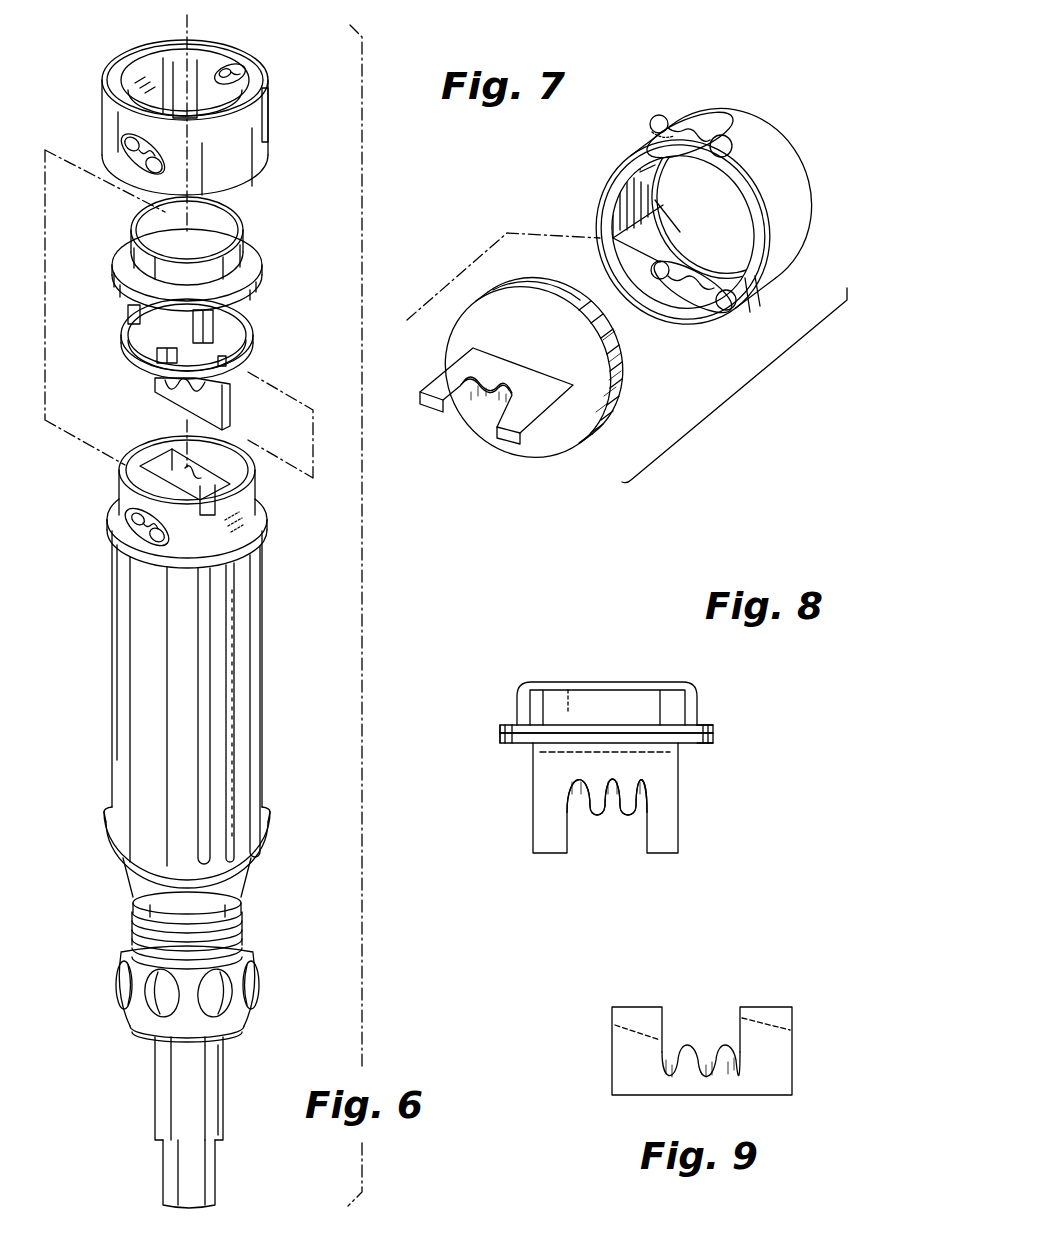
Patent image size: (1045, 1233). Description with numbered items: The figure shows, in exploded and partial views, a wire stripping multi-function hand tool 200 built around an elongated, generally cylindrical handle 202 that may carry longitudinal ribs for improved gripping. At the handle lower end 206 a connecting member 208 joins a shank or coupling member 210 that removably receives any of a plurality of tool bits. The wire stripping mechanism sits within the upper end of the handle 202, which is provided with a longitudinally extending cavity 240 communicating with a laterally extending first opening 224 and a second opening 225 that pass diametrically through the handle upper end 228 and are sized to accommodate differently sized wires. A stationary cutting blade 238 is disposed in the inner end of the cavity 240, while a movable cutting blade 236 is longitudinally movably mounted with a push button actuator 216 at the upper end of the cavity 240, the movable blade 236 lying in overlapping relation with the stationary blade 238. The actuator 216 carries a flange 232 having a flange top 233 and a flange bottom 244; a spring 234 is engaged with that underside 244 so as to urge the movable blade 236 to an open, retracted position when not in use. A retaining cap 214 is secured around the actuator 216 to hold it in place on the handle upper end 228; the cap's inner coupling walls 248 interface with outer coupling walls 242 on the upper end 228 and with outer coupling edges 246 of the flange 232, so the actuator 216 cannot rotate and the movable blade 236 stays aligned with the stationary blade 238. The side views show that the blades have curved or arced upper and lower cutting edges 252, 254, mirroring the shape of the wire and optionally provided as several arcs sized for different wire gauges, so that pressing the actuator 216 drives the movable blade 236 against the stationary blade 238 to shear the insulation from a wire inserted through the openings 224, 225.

In FIG. 6, the wire stripping multi-function hand tool 200 is at (53, 43).
In FIG. 6, the handle 202 is at (118, 697).
In FIG. 6, the handle lower end 206 is at (250, 967).
In FIG. 6, the connecting element 208 is at (163, 1077).
In FIG. 6, the coupling member 210 is at (173, 1170).
In FIG. 6, the retaining cap member 214 is at (268, 107).
In FIG. 7, the retaining cap member 214 is at (786, 190).
In FIG. 6, the push button actuator 216 is at (230, 214).
In FIG. 7, the push button actuator 216 is at (613, 353).
In FIG. 8, the push button actuator 216 is at (597, 682).
In FIG. 6, the first opening 224 is at (110, 136).
In FIG. 7, the first opening 224 is at (722, 140).
In FIG. 6, the second opening 225 is at (223, 68).
In FIG. 7, the second opening 225 is at (663, 274).
In FIG. 6, the handle upper end 228 is at (183, 543).
In FIG. 6, the flange 232 is at (250, 254).
In FIG. 8, the flange 232 is at (500, 735).
In FIG. 8, the flange top 233 is at (705, 723).
In FIG. 6, the spring 234 is at (122, 324).
In FIG. 6, the movable cutting member or blade 236 is at (242, 302).
In FIG. 7, the movable cutting member or blade 236 is at (437, 383).
In FIG. 8, the movable cutting member or blade 236 is at (680, 825).
In FIG. 6, the stationary cutting member or blade 238 is at (230, 404).
In FIG. 9, the stationary cutting member or blade 238 is at (770, 1010).
In FIG. 6, the cavity 240 is at (177, 466).
In FIG. 6, the outer coupling wall 242 is at (140, 455).
In FIG. 7, the flange bottom 244 is at (557, 432).
In FIG. 8, the flange bottom 244 is at (505, 745).
In FIG. 7, the outer coupling edge 246 is at (610, 413).
In FIG. 7, the inner coupling wall 248 is at (613, 190).
In FIG. 7, the upper cutting edge 252 is at (503, 382).
In FIG. 8, the upper cutting edge 252 is at (606, 800).
In FIG. 6, the lower cutting edge 254 is at (157, 388).
In FIG. 9, the lower cutting edge 254 is at (700, 1060).